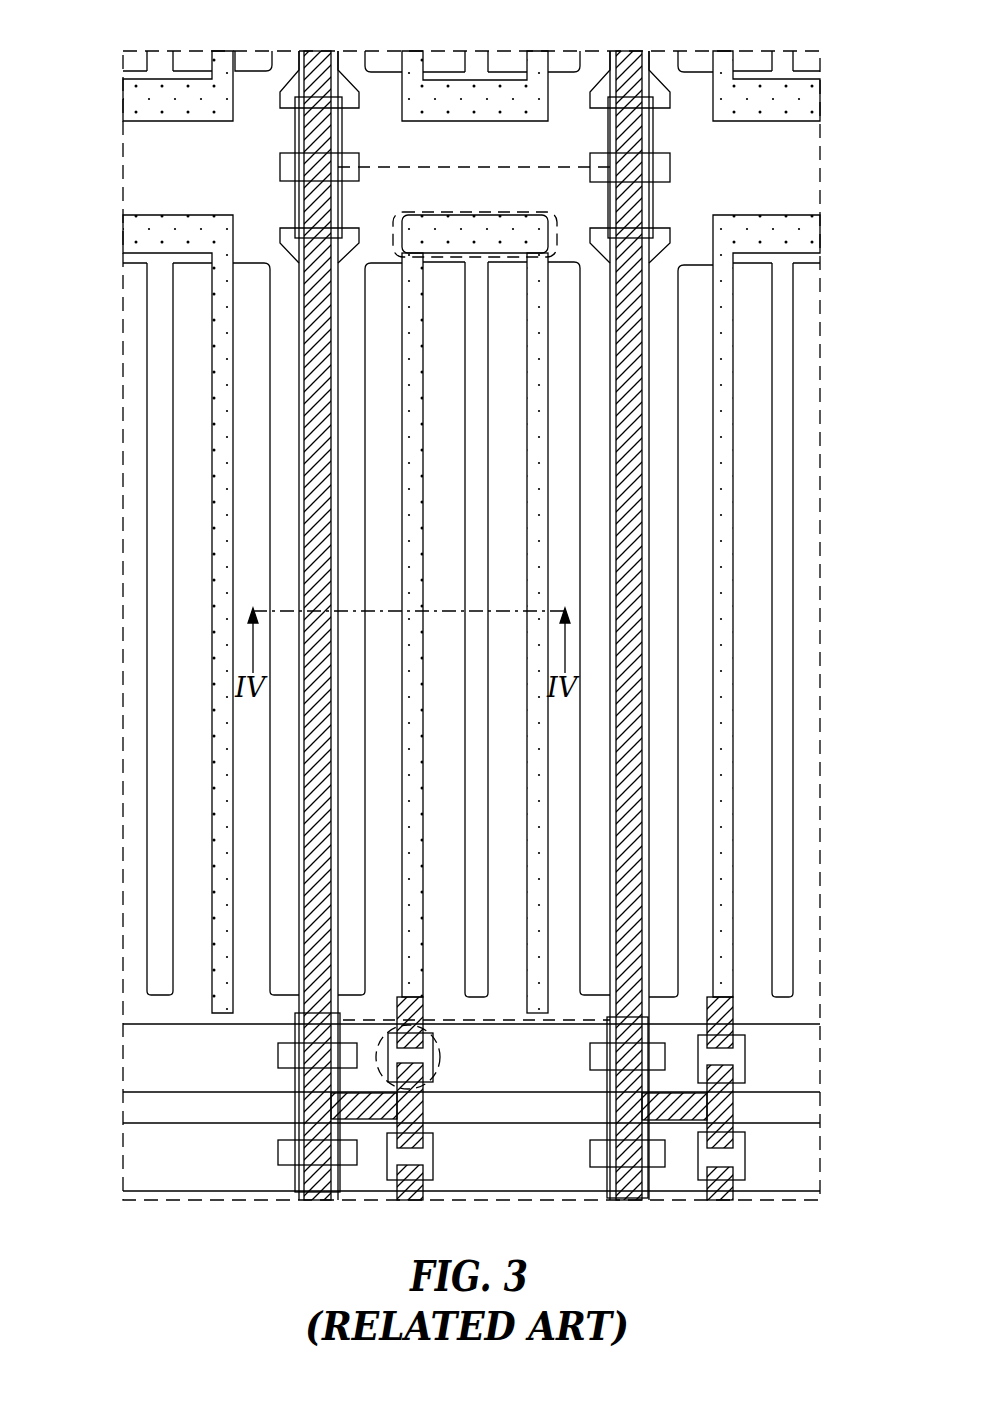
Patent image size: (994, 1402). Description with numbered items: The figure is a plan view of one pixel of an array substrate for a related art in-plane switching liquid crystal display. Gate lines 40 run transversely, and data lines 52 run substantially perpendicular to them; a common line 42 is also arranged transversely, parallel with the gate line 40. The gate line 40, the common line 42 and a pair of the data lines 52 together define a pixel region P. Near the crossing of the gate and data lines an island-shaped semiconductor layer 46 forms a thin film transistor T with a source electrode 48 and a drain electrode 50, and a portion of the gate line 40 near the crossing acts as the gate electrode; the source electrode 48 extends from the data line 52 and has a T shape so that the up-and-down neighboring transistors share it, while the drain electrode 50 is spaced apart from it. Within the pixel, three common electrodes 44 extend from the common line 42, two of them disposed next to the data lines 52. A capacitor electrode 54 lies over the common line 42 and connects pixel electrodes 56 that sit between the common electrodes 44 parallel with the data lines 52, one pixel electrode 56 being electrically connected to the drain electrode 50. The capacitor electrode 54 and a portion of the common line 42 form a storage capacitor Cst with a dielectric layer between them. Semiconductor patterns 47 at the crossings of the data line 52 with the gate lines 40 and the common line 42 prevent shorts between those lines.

The gate line 40 is at (136, 1063).
The common line 42 is at (808, 151).
The common electrode 44 is at (363, 347).
The island-shaped semiconductor layer 46 is at (442, 1050).
The semiconductor pattern 47 is at (296, 136).
The source electrode 48 is at (433, 1085).
The drain electrode 50 is at (422, 1033).
The data line 52 is at (324, 904).
The capacitor electrode 54 is at (477, 232).
The pixel electrode 56 is at (414, 424).
The pixel region P is at (386, 165).
The storage capacitor Cst is at (513, 212).
The thin film transistor T is at (442, 1067).